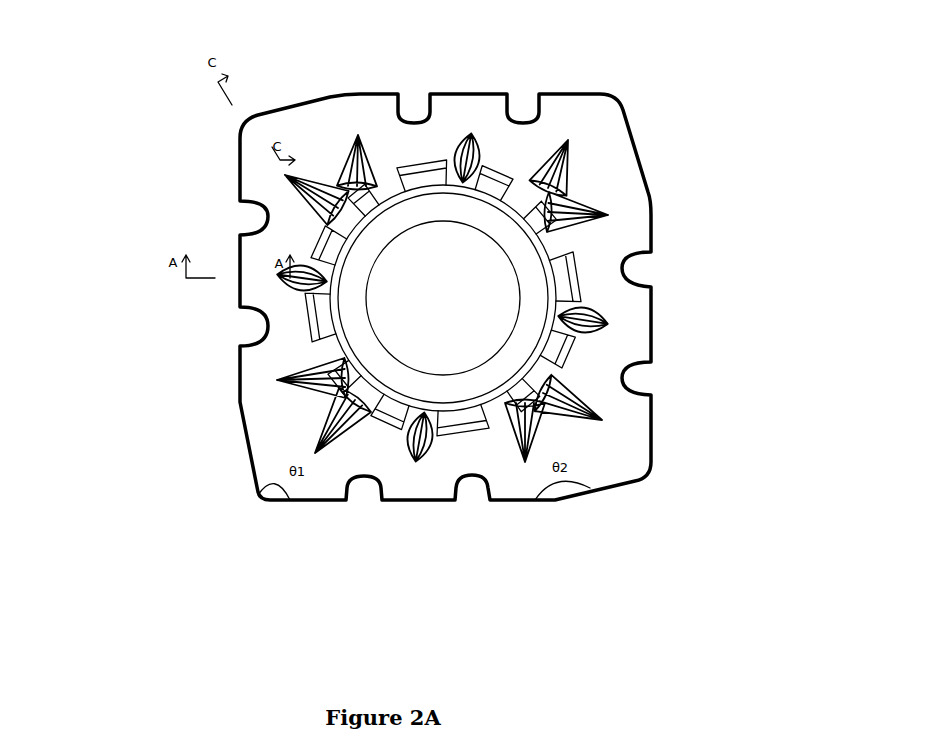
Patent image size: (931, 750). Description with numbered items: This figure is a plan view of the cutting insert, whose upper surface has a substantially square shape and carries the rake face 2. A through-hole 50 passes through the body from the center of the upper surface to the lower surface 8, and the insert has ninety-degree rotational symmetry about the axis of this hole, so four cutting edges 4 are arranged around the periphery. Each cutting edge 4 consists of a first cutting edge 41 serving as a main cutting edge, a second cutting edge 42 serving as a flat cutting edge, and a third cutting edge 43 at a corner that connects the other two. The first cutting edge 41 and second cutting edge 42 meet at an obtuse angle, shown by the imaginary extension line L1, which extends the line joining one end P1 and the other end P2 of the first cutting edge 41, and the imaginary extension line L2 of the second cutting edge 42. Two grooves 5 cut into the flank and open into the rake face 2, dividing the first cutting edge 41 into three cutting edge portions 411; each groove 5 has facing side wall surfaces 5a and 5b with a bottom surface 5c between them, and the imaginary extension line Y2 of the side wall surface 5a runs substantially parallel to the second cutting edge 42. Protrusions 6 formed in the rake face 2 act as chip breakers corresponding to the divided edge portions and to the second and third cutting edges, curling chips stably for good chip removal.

The rake face 2 is at (630, 160).
The cutting edge 4 is at (672, 62).
The groove 5 is at (230, 220).
The side wall surface 5a is at (352, 508).
The side wall surface 5b is at (375, 508).
The bottom surface 5c is at (363, 508).
The protrusion 6 is at (230, 328).
The lower surface 8 is at (288, 82).
The first cutting edge 41 is at (238, 255).
The cutting edge portion 411 is at (525, 617).
The second cutting edge 42 is at (272, 104).
The third cutting edge 43 is at (240, 124).
The through-hole 50 is at (440, 280).
The imaginary extension line L1 is at (72, 503).
The imaginary extension line L2 is at (240, 402).
The one end P1 is at (286, 588).
The other end P2 is at (558, 505).
The imaginary extension line Y2 is at (360, 480).